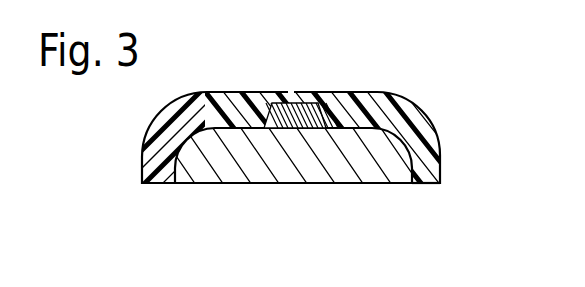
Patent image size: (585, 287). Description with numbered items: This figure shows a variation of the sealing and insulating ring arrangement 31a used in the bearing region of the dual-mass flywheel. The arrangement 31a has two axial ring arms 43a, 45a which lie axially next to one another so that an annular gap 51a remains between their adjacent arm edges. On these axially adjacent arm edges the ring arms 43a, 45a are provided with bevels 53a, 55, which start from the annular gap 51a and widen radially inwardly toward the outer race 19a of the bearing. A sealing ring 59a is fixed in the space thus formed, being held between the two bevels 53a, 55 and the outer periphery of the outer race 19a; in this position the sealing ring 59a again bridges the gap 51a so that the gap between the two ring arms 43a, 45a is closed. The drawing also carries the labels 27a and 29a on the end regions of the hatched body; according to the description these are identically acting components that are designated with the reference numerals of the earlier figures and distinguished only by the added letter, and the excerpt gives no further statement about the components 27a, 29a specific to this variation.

The sealing and insulating ring arrangement 31a is at (450, 130).
The axial ring arm 43a is at (158, 117).
The axial ring arm 45a is at (392, 94).
The annular gap 51a is at (292, 108).
The bevel 53a is at (274, 110).
The bevel 55 is at (324, 116).
The sealing ring 59a is at (304, 132).
The outer race 19a is at (377, 172).
The left end face 27a is at (141, 182).
The right end face 29a is at (443, 171).